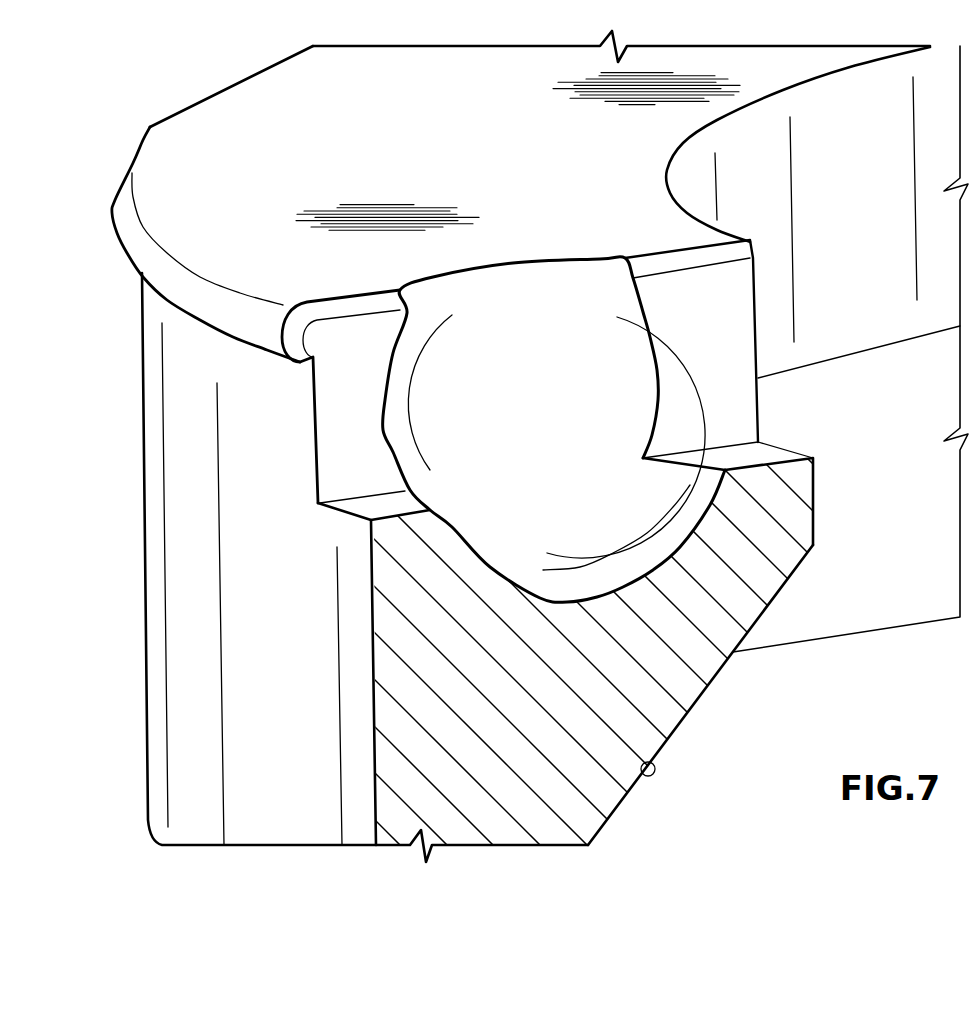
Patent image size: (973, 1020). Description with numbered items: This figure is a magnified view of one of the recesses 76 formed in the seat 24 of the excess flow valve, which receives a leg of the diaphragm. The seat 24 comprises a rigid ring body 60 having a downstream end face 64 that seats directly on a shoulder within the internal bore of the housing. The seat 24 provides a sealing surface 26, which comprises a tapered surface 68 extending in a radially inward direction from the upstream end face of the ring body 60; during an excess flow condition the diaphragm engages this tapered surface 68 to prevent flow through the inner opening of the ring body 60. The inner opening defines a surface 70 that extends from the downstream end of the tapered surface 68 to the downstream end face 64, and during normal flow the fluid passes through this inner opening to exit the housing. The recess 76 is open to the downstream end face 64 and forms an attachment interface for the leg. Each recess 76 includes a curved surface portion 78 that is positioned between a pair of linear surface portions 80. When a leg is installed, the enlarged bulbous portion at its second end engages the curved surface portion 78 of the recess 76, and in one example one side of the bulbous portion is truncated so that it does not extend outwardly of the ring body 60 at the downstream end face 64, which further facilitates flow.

The seat 24 is at (126, 447).
The sealing surface 26 is at (715, 677).
The rigid ring body 60 is at (176, 588).
The downstream end face 64 is at (168, 160).
The tapered surface 68 is at (641, 765).
The surface 70 is at (852, 206).
The recess 76 is at (640, 334).
The curved surface portion 78 is at (550, 469).
The linear surface portion 80 is at (390, 522).